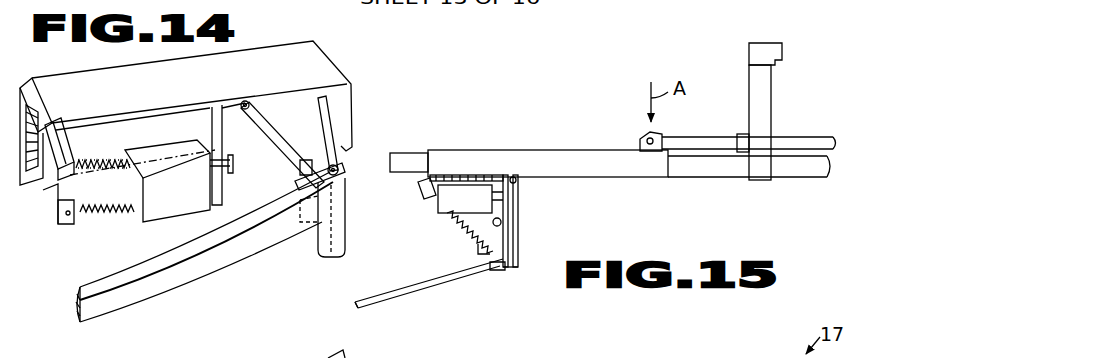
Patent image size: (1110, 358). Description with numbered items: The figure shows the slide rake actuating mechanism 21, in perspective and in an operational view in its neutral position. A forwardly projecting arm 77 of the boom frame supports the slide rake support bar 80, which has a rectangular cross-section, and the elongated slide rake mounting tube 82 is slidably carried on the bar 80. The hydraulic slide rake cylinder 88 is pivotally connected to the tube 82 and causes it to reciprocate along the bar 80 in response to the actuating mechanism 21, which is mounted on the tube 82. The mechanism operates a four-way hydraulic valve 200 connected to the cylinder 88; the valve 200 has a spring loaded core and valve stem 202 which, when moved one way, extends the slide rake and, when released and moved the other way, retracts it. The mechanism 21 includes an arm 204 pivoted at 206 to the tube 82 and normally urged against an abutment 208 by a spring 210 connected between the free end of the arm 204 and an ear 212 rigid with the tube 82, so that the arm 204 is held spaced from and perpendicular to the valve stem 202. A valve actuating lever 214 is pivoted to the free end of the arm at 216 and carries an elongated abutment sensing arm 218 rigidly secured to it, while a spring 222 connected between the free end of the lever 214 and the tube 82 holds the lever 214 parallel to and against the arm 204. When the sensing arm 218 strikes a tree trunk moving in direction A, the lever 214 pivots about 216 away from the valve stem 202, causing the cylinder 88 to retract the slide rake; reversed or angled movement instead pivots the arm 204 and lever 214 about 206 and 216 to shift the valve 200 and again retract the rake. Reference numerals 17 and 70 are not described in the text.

In FIG. 15, the mounting bracket 17 is at (784, 60).
In FIG. 14, the slide rake actuating mechanism 21 is at (118, 275).
In FIG. 15, the slide rake actuating mechanism 21 is at (450, 288).
In FIG. 15, the cap 70 is at (752, 52).
In FIG. 15, the forwardly projecting arm 77 is at (765, 81).
In FIG. 14, the slide rake support bar 80 is at (36, 97).
In FIG. 15, the slide rake support bar 80 is at (707, 175).
In FIG. 14, the elongated slide rake mounting tube 82 is at (313, 43).
In FIG. 15, the elongated slide rake mounting tube 82 is at (620, 152).
In FIG. 15, the hydraulic slide rake cylinder 88 is at (788, 139).
In FIG. 14, the four-way hydraulic valve 200 is at (142, 180).
In FIG. 15, the four-way hydraulic valve 200 is at (450, 232).
In FIG. 14, the valve stem 202 is at (214, 160).
In FIG. 15, the valve stem 202 is at (513, 195).
In FIG. 14, the arm 204 is at (262, 130).
In FIG. 15, the arm 204 is at (510, 208).
In FIG. 14, the pivot 206 is at (246, 101).
In FIG. 15, the pivot 206 is at (515, 178).
In FIG. 14, the abutment 208 is at (198, 108).
In FIG. 15, the abutment 208 is at (513, 228).
In FIG. 14, the spring 210 is at (88, 214).
In FIG. 15, the spring 210 is at (477, 249).
In FIG. 14, the ear 212 is at (70, 127).
In FIG. 15, the ear 212 is at (424, 198).
In FIG. 14, the valve actuating lever 214 is at (349, 90).
In FIG. 15, the valve actuating lever 214 is at (518, 248).
In FIG. 14, the pivot 216 is at (340, 170).
In FIG. 15, the pivot 216 is at (515, 268).
In FIG. 14, the abutment sensing arm 218 is at (86, 320).
In FIG. 15, the abutment sensing arm 218 is at (383, 303).
In FIG. 14, the spring 222 is at (310, 156).